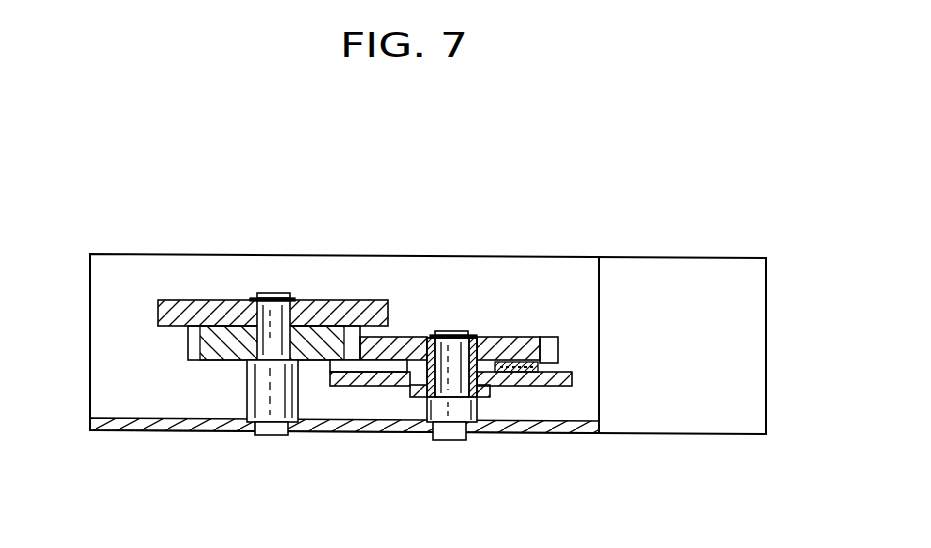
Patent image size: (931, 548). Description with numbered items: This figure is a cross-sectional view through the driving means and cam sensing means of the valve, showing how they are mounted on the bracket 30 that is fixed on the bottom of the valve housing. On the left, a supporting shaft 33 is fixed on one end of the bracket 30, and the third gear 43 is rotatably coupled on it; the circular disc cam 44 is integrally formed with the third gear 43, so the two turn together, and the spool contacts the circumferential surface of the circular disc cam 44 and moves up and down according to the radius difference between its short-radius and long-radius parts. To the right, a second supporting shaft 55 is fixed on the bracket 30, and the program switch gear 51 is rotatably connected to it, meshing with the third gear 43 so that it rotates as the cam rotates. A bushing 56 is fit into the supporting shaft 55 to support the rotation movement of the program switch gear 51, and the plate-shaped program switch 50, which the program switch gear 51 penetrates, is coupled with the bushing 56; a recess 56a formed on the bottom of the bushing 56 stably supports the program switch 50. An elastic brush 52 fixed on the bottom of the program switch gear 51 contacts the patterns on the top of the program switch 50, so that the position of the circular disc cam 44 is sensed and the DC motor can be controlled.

The bracket 30 is at (722, 295).
The supporting shaft 33 is at (275, 296).
The third gear 43 is at (193, 343).
The circular disc cam 44 is at (195, 302).
The program switch 50 is at (503, 388).
The program switch gear 51 is at (530, 362).
The elastic brush 52 is at (537, 388).
The supporting shaft 55 is at (450, 331).
The bushing 56 is at (413, 338).
The recess 56a is at (415, 397).